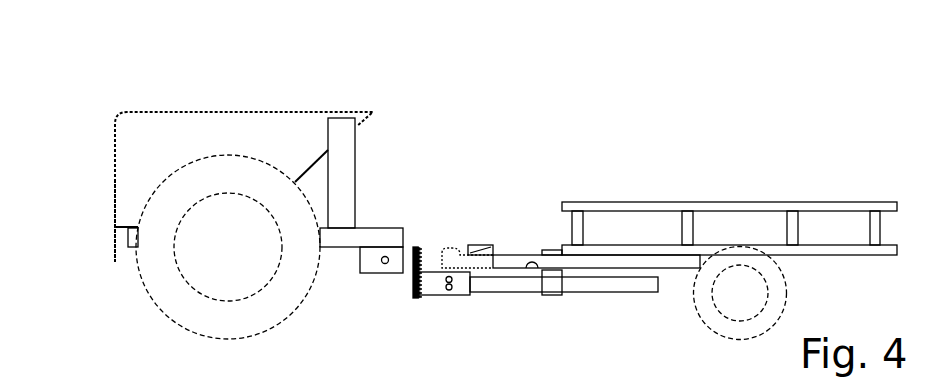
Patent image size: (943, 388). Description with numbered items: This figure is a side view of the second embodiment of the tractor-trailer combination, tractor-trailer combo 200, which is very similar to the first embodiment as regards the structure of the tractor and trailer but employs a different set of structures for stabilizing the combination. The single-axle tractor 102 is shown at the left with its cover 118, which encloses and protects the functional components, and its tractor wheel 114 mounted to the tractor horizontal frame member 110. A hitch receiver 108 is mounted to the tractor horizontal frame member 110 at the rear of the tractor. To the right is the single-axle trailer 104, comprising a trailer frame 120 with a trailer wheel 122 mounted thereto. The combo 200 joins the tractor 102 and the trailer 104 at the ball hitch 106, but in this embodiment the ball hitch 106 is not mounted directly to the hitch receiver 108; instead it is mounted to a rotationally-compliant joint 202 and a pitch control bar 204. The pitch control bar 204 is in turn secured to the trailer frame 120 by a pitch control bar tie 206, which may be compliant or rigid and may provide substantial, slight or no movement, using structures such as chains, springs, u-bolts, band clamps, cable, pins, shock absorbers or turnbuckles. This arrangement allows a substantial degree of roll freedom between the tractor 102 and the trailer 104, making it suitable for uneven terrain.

The tractor-trailer combo 200 is at (484, 72).
The single-axle tractor 102 is at (245, 108).
The cover 118 is at (114, 176).
The tractor wheel 114 is at (230, 155).
The tractor horizontal frame member 110 is at (378, 228).
The hitch receiver 108 is at (375, 272).
The rotationally-compliant joint 202 is at (450, 298).
The pitch control bar 204 is at (555, 296).
The trailer frame 120 is at (662, 263).
The ball hitch 106 is at (446, 250).
The pitch control bar tie 206 is at (540, 250).
The single-axle trailer 104 is at (692, 200).
The trailer wheel 122 is at (730, 339).